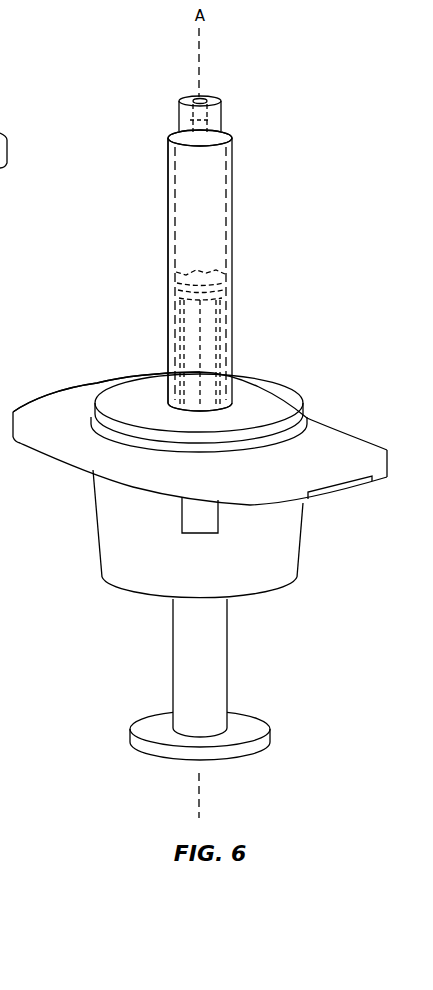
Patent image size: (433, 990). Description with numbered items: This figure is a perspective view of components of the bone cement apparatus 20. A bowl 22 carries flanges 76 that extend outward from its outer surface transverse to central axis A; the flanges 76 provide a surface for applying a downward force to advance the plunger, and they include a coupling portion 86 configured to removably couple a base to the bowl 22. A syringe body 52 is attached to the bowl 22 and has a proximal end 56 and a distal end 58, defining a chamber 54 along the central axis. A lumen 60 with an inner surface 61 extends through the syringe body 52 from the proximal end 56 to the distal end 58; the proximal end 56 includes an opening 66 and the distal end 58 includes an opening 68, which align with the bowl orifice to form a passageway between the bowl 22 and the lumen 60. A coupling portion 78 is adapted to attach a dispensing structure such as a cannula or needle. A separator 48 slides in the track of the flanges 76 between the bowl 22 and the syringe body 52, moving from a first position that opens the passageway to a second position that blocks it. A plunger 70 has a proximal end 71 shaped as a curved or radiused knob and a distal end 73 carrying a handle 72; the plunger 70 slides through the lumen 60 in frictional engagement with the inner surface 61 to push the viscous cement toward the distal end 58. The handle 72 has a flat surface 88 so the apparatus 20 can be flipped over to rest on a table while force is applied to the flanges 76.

The apparatus 20 is at (364, 168).
The bowl 22 is at (142, 570).
The separator 48 is at (337, 492).
The syringe body 52 is at (208, 210).
The chamber 54 is at (208, 228).
The proximal end 56 is at (236, 406).
The distal end 58 is at (215, 100).
The lumen 60 is at (170, 202).
The inner surface 61 is at (230, 151).
The opening 66 is at (210, 97).
The opening 68 is at (195, 406).
The plunger 70 is at (172, 362).
The proximal end 71 is at (172, 267).
The handle 72 is at (252, 733).
The distal end 73 is at (167, 393).
The flanges 76 is at (333, 440).
The coupling portion 78 is at (208, 118).
The coupling portion 86 is at (278, 402).
The flat surface 88 is at (243, 758).